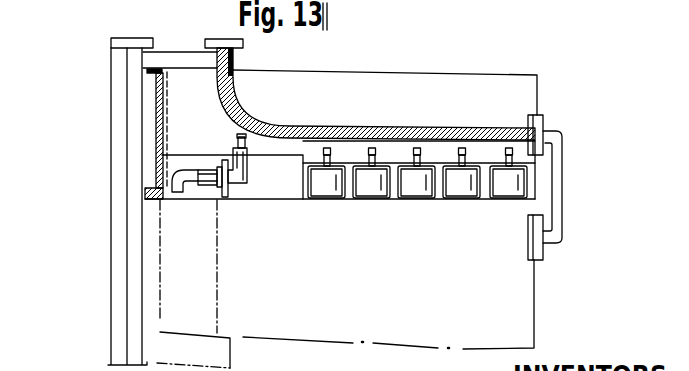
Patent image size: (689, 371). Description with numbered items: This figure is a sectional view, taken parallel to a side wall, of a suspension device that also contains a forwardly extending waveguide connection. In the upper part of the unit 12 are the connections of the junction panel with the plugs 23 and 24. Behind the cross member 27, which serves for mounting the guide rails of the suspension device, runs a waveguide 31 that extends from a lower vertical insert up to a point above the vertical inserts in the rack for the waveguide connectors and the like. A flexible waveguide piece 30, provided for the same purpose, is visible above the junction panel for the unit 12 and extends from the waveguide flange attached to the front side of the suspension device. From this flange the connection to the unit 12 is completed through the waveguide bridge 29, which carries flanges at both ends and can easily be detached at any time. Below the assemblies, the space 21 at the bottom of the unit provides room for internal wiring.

The unit 12 is at (507, 325).
The space for internal wiring 21 is at (172, 320).
The plug 23 is at (330, 183).
The plug 24 is at (243, 185).
The cross member 27 is at (153, 162).
The waveguide bridge 29 is at (554, 237).
The flexible waveguide piece 30 is at (445, 138).
The waveguide 31 is at (133, 272).